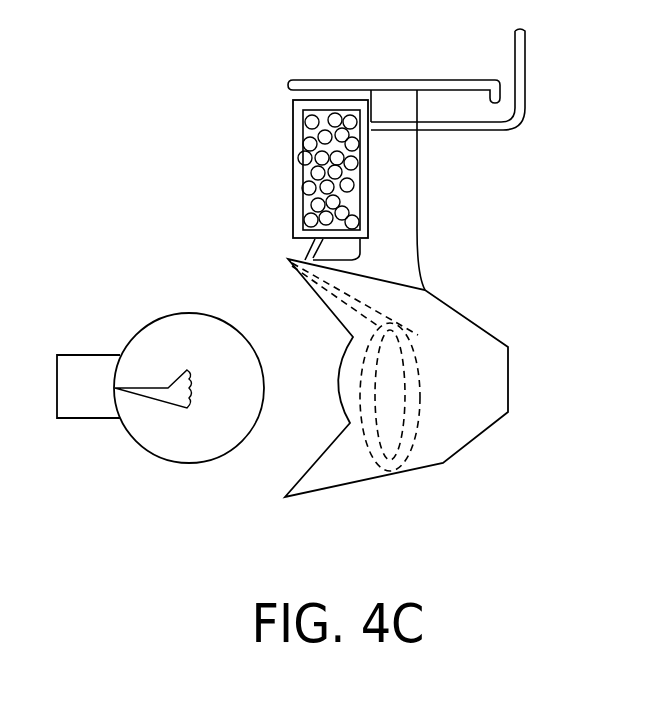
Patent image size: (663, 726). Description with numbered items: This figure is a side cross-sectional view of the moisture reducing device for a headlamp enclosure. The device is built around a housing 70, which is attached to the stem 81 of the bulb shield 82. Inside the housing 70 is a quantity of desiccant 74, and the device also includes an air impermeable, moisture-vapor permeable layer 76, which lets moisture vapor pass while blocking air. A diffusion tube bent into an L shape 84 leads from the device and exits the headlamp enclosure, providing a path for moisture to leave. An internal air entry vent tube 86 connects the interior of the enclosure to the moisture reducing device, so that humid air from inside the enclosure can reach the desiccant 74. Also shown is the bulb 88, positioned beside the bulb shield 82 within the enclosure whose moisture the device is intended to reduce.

The housing 70 is at (373, 152).
The desiccant 74 is at (357, 187).
The air impermeable, moisture-vapor permeable layer 76 is at (292, 182).
The stem 81 is at (378, 79).
The bulb shield 82 is at (455, 432).
The diffusion tube bent into an "L" shape 84 is at (465, 132).
The internal air entry vent tube 86 is at (413, 348).
The bulb 88 is at (162, 460).